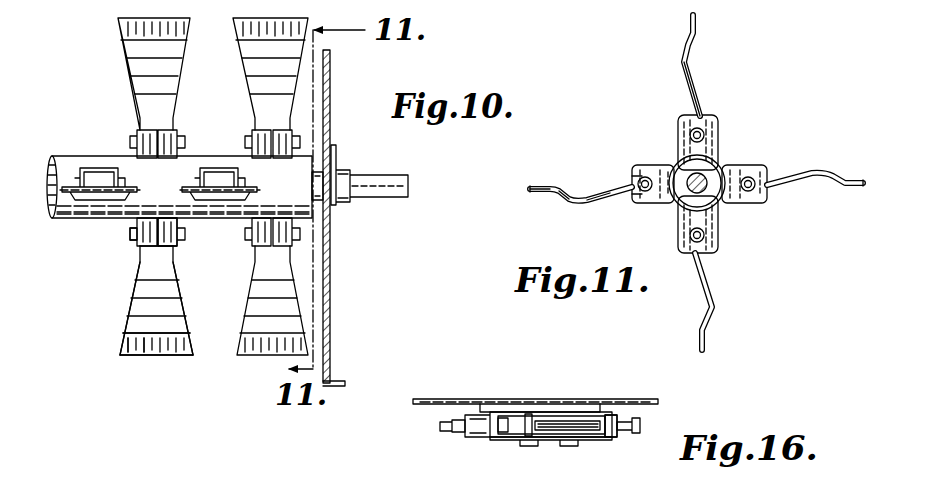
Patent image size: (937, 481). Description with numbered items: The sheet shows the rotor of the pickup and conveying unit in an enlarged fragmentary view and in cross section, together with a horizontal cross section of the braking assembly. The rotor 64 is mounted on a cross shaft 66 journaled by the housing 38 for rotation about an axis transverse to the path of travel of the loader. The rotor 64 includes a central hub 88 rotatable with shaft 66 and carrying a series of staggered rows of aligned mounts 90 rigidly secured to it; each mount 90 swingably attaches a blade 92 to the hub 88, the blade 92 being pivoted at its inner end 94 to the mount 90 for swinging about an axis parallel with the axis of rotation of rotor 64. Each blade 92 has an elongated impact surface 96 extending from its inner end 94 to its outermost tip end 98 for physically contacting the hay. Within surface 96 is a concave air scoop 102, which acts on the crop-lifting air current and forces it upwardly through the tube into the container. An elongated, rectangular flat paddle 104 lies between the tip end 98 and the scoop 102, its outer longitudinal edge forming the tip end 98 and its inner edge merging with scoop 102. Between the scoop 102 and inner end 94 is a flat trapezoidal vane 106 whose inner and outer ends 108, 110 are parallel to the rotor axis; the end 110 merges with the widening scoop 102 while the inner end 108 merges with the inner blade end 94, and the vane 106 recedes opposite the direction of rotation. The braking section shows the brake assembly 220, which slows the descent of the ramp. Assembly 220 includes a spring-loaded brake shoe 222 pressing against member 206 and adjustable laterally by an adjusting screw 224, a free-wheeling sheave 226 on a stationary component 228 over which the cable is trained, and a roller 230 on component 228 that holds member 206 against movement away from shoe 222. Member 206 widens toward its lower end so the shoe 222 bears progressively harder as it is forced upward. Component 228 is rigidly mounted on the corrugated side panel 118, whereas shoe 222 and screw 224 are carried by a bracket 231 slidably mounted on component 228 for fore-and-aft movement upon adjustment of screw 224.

In FIG. 10, the housing 38 is at (330, 262).
In FIG. 10, the rotor 64 is at (111, 150).
In FIG. 11, the rotor 64 is at (745, 146).
In FIG. 10, the cross shaft 66 is at (383, 178).
In FIG. 11, the cross shaft 66 is at (688, 196).
In FIG. 10, the central hub 88 is at (68, 157).
In FIG. 11, the central hub 88 is at (716, 205).
In FIG. 10, the mount 90 is at (177, 232).
In FIG. 11, the mount 90 is at (752, 205).
In FIG. 10, the blade 92 is at (178, 58).
In FIG. 11, the blade 92 is at (684, 72).
In FIG. 10, the inner end 94 is at (148, 244).
In FIG. 11, the inner end 94 is at (658, 160).
In FIG. 10, the impact surface 96 is at (155, 323).
In FIG. 11, the impact surface 96 is at (696, 70).
In FIG. 10, the tip end 98 is at (140, 358).
In FIG. 11, the tip end 98 is at (536, 189).
In FIG. 10, the air scoop 102 is at (168, 328).
In FIG. 11, the air scoop 102 is at (578, 193).
In FIG. 10, the paddle 104 is at (160, 350).
In FIG. 11, the paddle 104 is at (540, 197).
In FIG. 10, the vane 106 is at (152, 268).
In FIG. 11, the vane 106 is at (632, 198).
In FIG. 10, the inner end of vane 108 is at (165, 260).
In FIG. 11, the inner end of vane 108 is at (618, 186).
In FIG. 10, the outer end of vane 110 is at (175, 305).
In FIG. 11, the outer end of vane 110 is at (604, 195).
In FIG. 16, the corrugated side panel 118 is at (428, 398).
In FIG. 16, the member 206 is at (512, 428).
In FIG. 16, the brake assembly 220 is at (450, 427).
In FIG. 16, the brake shoe 222 is at (478, 430).
In FIG. 16, the adjusting screw 224 is at (641, 426).
In FIG. 16, the free-wheeling sheave 226 is at (548, 414).
In FIG. 16, the stationary component 228 is at (588, 412).
In FIG. 16, the roller 230 is at (530, 412).
In FIG. 16, the bracket 231 is at (606, 438).